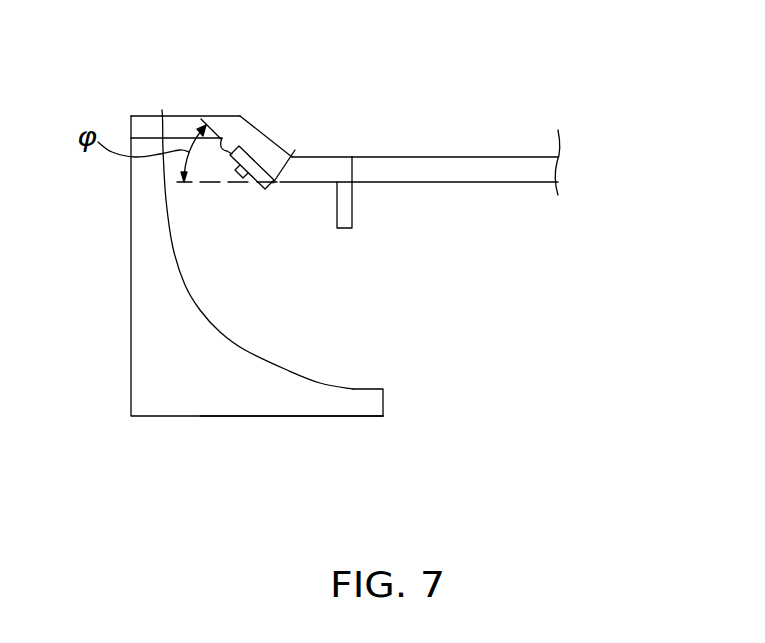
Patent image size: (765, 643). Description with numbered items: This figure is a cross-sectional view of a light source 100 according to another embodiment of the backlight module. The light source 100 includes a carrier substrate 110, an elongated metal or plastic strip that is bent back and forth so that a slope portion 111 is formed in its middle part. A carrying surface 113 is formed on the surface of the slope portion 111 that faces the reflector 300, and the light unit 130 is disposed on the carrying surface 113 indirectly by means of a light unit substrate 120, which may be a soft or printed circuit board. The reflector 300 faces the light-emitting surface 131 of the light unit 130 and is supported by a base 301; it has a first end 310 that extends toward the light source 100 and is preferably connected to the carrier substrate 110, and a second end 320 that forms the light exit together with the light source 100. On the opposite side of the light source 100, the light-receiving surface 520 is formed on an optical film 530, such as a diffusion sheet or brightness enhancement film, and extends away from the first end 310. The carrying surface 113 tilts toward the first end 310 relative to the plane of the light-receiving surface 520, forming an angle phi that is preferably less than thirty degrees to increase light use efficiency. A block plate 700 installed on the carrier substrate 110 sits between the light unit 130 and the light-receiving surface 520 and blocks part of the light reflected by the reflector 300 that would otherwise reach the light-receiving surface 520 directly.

The light source 100 is at (353, 52).
The carrier substrate 110 is at (320, 172).
The slope portion 111 is at (258, 148).
The carrying surface 113 is at (220, 137).
The light unit substrate 120 is at (273, 175).
The light unit 130 is at (275, 157).
The light-emitting surface 131 is at (280, 150).
The reflector 300 is at (242, 337).
The base 301 is at (260, 397).
The first end 310 is at (162, 110).
The second end 320 is at (383, 389).
The light-receiving surface 520 is at (525, 183).
The optical film 530 is at (493, 170).
The block plate 700 is at (345, 203).